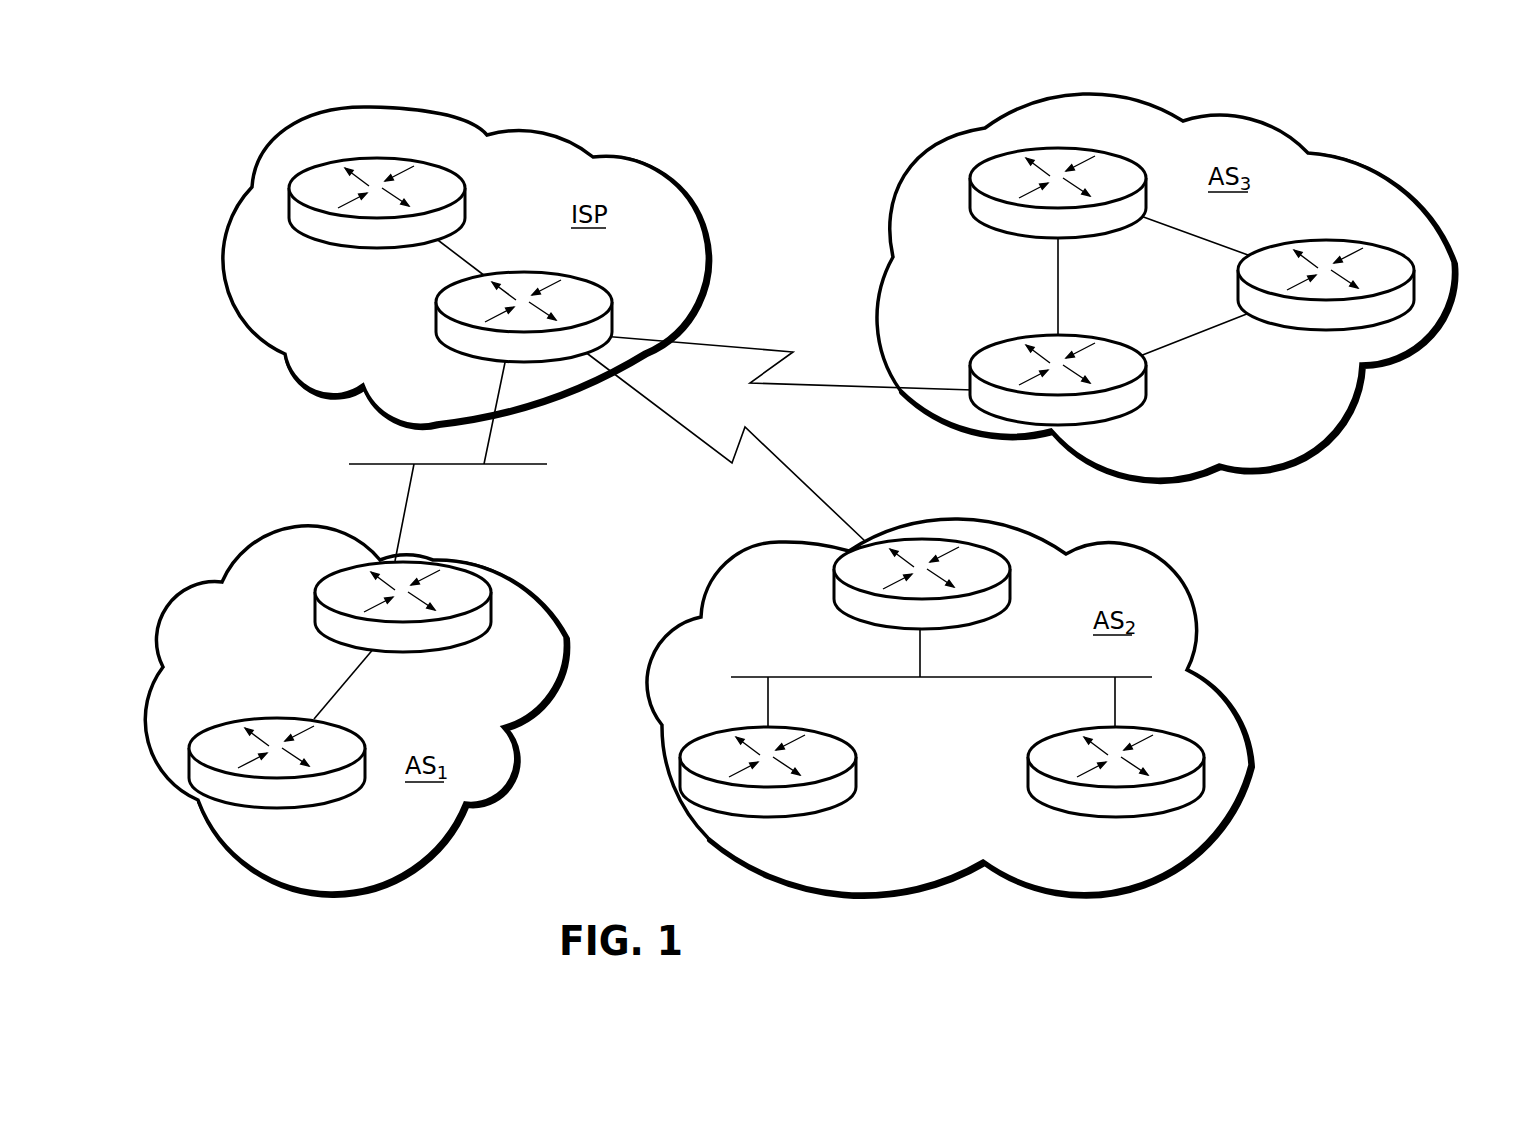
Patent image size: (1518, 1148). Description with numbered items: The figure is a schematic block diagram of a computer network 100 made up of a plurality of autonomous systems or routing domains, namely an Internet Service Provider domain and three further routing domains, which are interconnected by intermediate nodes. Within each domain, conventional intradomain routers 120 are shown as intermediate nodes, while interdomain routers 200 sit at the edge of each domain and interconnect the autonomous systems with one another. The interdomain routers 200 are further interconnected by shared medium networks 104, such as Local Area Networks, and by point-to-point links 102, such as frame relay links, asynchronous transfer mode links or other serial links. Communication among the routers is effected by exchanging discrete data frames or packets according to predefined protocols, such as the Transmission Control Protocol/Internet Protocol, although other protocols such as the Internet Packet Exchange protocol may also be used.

The computer network 100 is at (1476, 173).
The point-to-point links 102 is at (871, 390).
The shared medium networks 104 is at (507, 466).
The intradomain routers 120 is at (375, 158).
The interdomain routers 200 is at (592, 285).